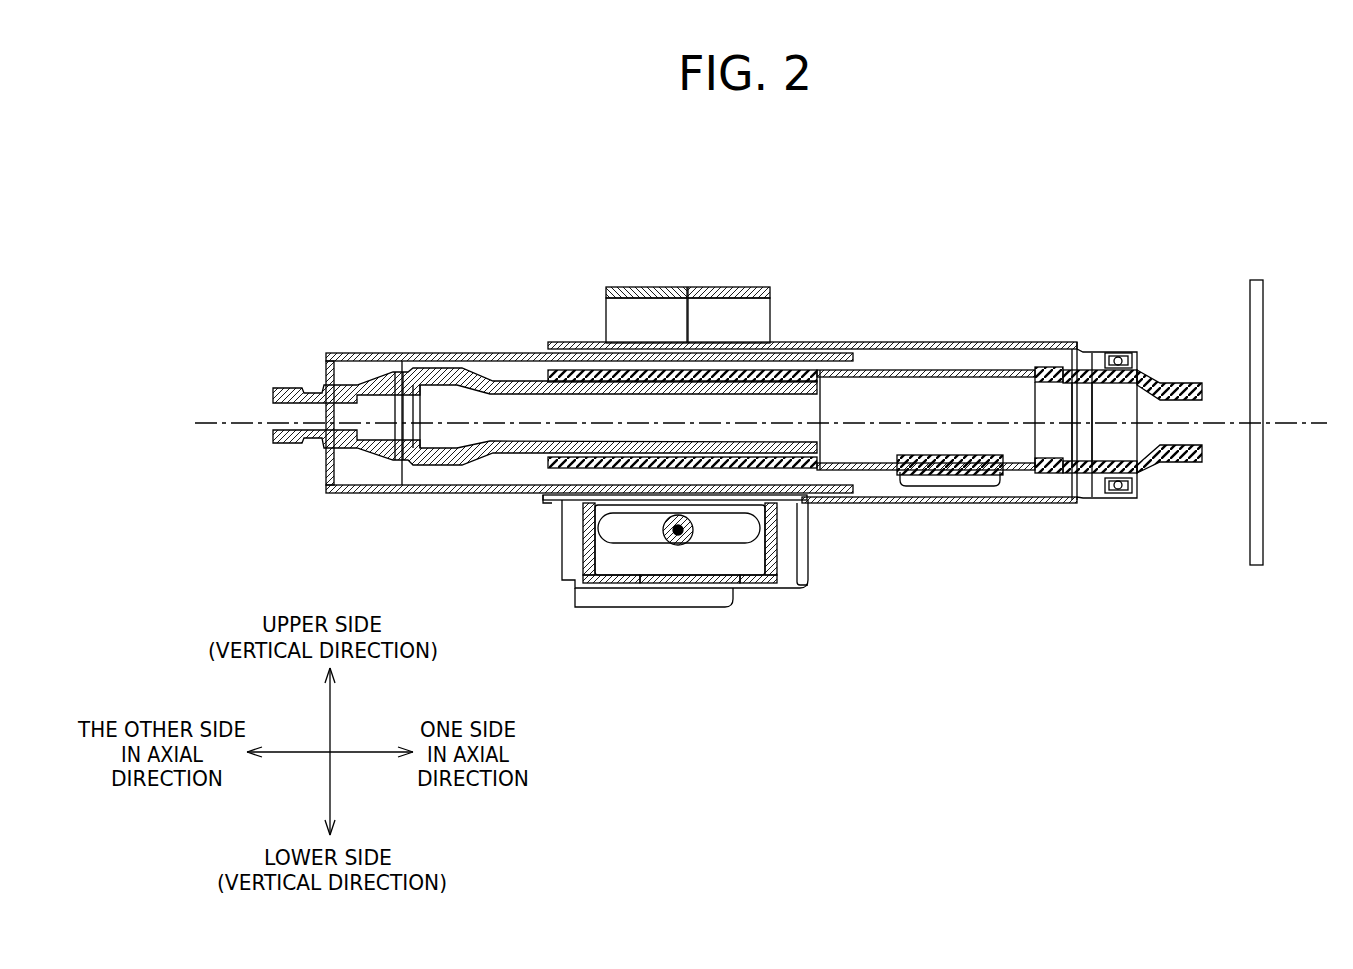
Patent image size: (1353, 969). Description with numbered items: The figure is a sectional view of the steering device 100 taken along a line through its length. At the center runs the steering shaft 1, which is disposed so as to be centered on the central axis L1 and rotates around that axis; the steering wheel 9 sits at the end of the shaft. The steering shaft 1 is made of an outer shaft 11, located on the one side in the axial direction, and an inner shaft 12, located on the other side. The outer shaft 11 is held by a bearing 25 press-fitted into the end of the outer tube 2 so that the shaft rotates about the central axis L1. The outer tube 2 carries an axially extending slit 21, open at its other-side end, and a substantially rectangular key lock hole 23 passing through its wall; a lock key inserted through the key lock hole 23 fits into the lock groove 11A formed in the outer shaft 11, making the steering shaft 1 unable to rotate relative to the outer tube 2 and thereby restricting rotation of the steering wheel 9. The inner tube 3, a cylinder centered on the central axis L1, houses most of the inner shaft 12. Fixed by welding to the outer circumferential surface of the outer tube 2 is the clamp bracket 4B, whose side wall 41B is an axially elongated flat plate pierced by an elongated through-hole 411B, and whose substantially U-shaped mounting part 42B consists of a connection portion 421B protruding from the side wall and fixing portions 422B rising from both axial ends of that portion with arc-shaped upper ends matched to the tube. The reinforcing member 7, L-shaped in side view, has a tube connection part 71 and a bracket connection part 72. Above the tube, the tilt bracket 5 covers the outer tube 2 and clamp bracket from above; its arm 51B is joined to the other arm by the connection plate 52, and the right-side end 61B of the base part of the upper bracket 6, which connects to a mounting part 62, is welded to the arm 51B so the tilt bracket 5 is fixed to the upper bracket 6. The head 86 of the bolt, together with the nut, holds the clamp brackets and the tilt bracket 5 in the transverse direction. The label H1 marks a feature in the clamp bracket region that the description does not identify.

The steering device 100 is at (1005, 282).
The steering shaft 1 is at (737, 417).
The outer shaft 11 is at (875, 440).
The lock groove 11A is at (967, 465).
The inner shaft 12 is at (522, 380).
The outer tube 2 is at (831, 473).
The slit 21 is at (552, 503).
The key lock hole 23 is at (917, 478).
The bearing 25 is at (1140, 358).
The inner tube 3 is at (468, 352).
The tilt bracket 5 is at (646, 246).
The arm 51B is at (663, 313).
The connection plate 52 is at (623, 287).
The upper bracket 6 is at (734, 246).
The right-side end 61B is at (747, 313).
The mounting part 62 is at (708, 287).
The reinforcing member 7 is at (723, 606).
The tube connection part 71 is at (832, 590).
The bracket connection part 72 is at (758, 590).
The clamp bracket 4B is at (700, 673).
The side wall 41B is at (642, 558).
The through-hole 411B is at (633, 537).
The mounting part 42B is at (672, 709).
The connection portion 421B is at (698, 580).
The fixing portions 422B is at (592, 578).
The head 86 is at (678, 546).
The slot hole H1 is at (697, 530).
The steering wheel 9 is at (1255, 562).
The central axis L1 is at (200, 425).